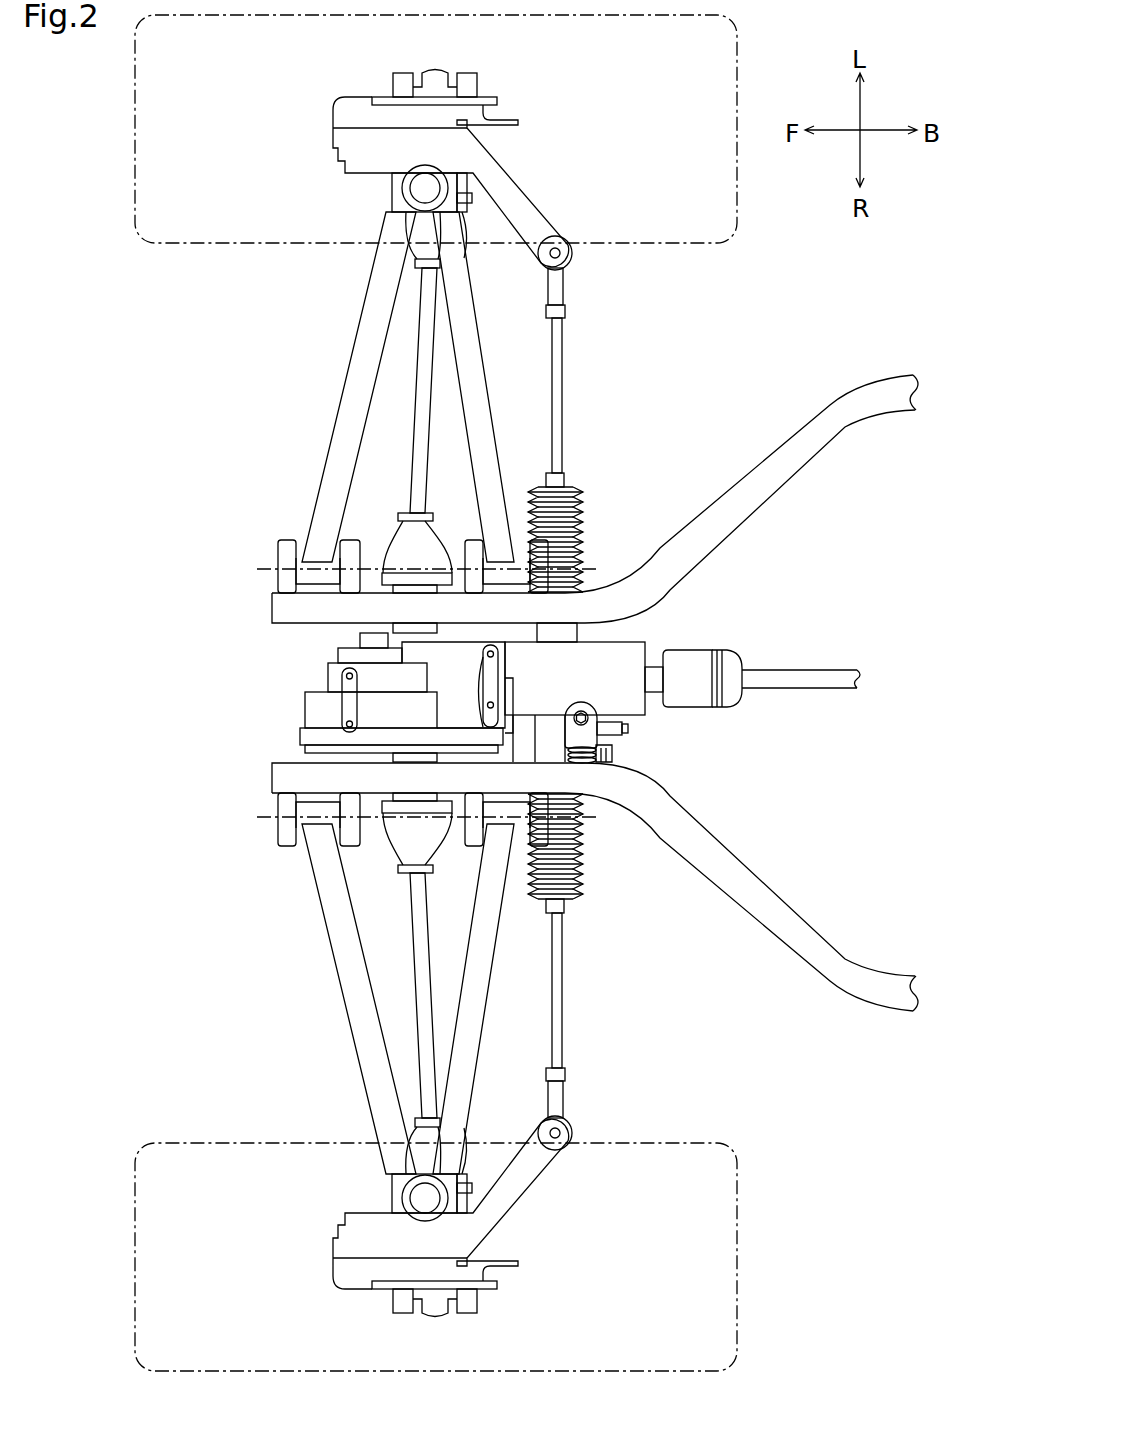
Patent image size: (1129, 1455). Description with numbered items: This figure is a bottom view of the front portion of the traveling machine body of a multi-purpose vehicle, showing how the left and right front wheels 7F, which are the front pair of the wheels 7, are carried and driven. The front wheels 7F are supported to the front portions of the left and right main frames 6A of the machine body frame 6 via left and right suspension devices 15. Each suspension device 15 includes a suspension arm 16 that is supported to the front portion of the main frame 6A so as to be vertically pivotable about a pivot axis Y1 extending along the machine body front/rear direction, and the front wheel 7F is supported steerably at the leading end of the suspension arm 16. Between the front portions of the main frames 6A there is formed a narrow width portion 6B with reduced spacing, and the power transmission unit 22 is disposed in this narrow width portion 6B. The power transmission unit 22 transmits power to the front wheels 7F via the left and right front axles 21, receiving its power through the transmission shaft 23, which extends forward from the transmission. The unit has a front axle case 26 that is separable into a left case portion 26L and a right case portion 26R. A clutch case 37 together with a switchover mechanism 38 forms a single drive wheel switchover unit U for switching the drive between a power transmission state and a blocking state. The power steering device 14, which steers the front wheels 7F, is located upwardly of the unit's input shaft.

The front wheel 7F is at (183, 245).
The wheel 7 is at (436, 693).
The suspension arm 16 is at (319, 446).
The suspension device 15 is at (353, 693).
The front axle 21 is at (419, 411).
The power steering device 14 is at (582, 513).
The pivot axis Y1 is at (412, 695).
The machine body frame 6 is at (595, 696).
The main frame 6A is at (753, 468).
The narrow width portion 6B is at (623, 625).
The power transmission unit 22 is at (303, 671).
The front axle case 26 is at (303, 721).
The left case portion 26L is at (307, 713).
The right case portion 26R is at (307, 750).
The clutch case 37 is at (597, 655).
The drive wheel switchover unit U is at (585, 637).
The switchover mechanism 38 is at (626, 756).
The transmission shaft 23 is at (797, 683).